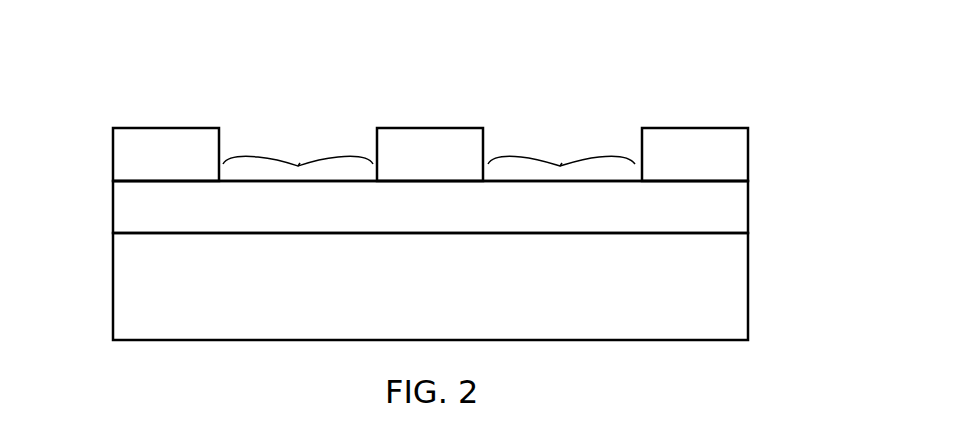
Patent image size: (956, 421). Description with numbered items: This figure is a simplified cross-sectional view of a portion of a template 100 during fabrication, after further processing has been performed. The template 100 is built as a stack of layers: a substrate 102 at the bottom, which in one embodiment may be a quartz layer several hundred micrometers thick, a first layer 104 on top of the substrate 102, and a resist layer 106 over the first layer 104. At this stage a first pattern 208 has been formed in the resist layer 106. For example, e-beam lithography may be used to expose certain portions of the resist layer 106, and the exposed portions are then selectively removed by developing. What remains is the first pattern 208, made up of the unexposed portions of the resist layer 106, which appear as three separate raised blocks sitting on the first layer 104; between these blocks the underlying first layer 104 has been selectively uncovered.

The template 100 is at (101, 69).
The substrate 102 is at (748, 273).
The first layer 104 is at (748, 196).
The resist layer 106 is at (748, 138).
The first pattern 208 is at (93, 130).